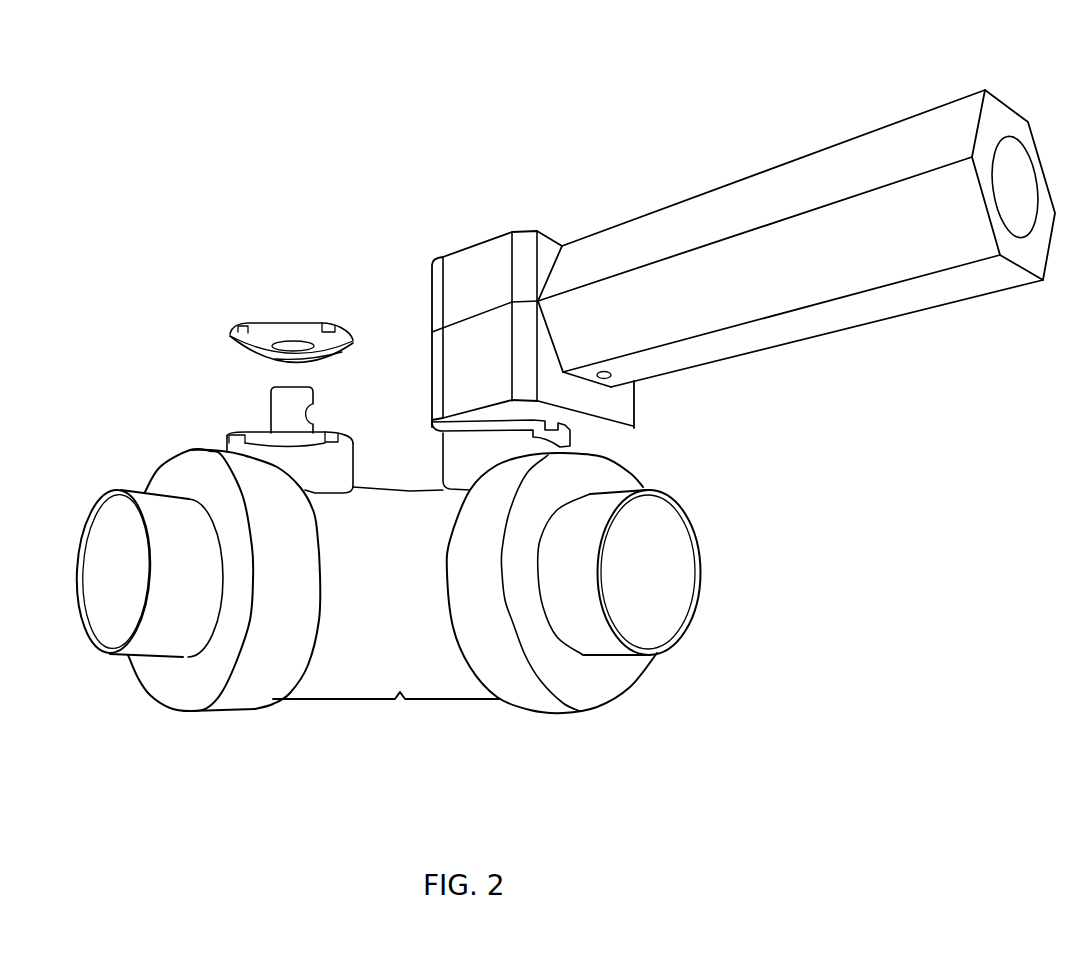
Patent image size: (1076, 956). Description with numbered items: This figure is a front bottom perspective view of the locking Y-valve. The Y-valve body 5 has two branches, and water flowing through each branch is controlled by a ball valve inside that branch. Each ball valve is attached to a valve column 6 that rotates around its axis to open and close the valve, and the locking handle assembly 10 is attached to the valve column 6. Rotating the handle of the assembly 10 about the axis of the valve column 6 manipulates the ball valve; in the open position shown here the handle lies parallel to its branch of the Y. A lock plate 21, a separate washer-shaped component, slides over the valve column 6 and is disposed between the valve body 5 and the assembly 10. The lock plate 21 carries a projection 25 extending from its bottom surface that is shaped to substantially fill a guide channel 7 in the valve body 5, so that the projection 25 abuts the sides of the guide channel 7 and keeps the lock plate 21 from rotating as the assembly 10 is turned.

The Y-valve body 5 is at (362, 700).
The valve column 6 is at (313, 410).
The guide channel 7 is at (250, 433).
The locking handle assembly 10 is at (1002, 55).
The lock plate 21 is at (283, 320).
The projection 25 is at (353, 341).